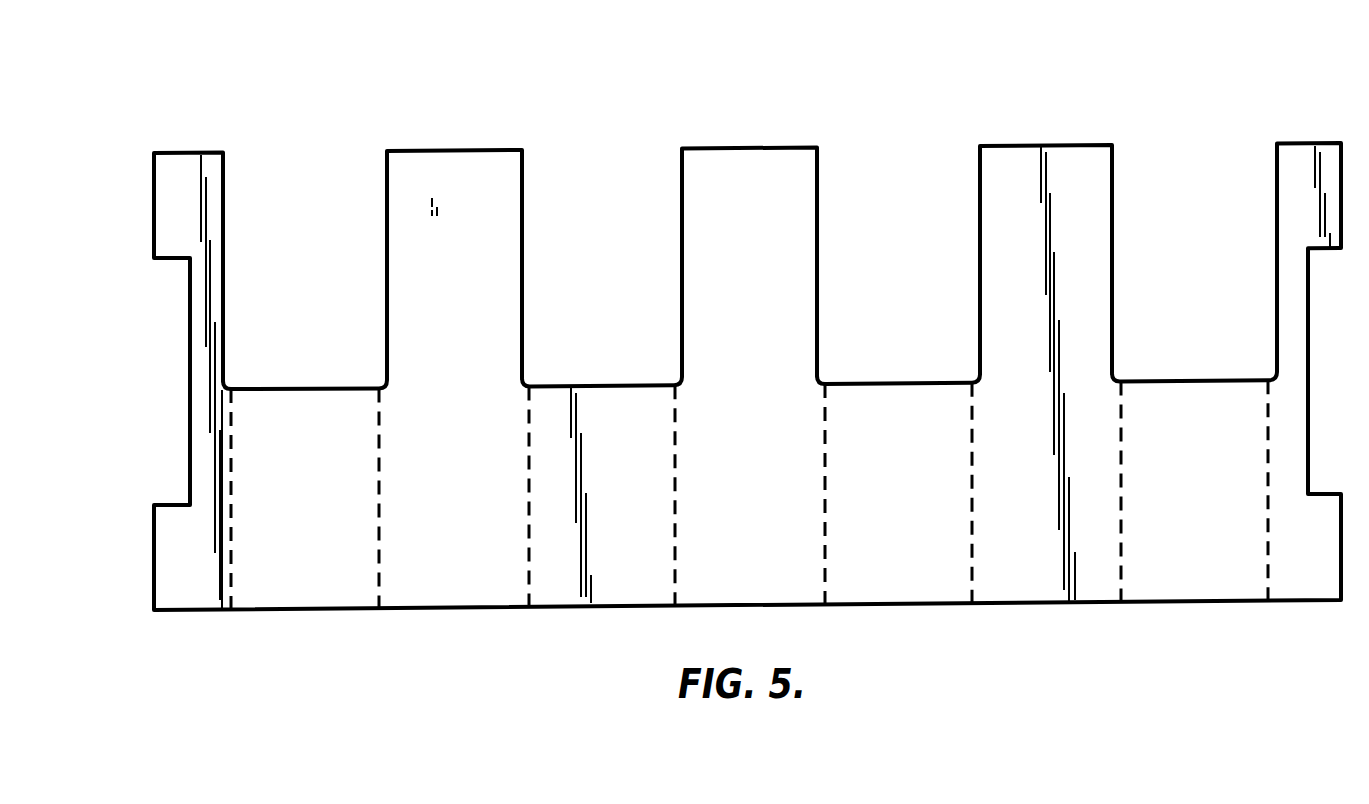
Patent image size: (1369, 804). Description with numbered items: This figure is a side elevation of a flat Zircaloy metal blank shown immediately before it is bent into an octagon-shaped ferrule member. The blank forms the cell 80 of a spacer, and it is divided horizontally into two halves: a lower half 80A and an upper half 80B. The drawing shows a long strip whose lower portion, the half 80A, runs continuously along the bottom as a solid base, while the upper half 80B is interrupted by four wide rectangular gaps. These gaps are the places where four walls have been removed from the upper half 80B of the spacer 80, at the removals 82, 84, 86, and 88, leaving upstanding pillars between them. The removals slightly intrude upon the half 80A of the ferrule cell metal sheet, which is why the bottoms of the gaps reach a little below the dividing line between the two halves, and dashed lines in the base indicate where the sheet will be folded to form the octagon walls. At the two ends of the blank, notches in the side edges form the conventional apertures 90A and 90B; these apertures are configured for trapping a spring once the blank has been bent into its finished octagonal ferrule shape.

The cell 80 is at (803, 80).
The lower half of cell 80A is at (329, 562).
The upper half of cell 80B is at (233, 109).
The wall removal 82 is at (312, 273).
The wall removal 84 is at (622, 270).
The wall removal 86 is at (919, 267).
The wall removal 88 is at (1217, 266).
The aperture 90A is at (190, 332).
The aperture 90B is at (1310, 320).